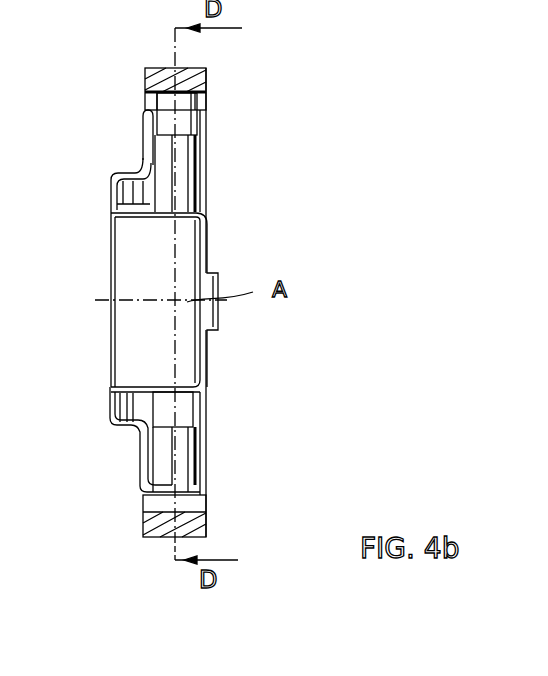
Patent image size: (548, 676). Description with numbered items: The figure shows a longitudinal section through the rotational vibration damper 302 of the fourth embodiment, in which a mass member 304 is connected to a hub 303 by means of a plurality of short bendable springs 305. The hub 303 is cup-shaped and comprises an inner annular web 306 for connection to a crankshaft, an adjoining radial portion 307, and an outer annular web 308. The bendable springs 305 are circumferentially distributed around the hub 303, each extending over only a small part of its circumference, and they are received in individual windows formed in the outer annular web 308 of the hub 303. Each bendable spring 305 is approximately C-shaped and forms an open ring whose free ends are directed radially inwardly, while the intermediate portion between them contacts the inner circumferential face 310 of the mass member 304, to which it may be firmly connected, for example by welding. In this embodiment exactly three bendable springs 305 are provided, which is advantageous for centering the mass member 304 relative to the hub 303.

The rotational vibration damper 302 is at (316, 85).
The hub 303 is at (208, 233).
The mass member 304 is at (197, 80).
The bendable spring 305 is at (190, 125).
The inner annular web 306 is at (162, 217).
The radial portion 307 is at (140, 155).
The outer annular web 308 is at (162, 485).
The inner circumferential face 310 is at (205, 512).